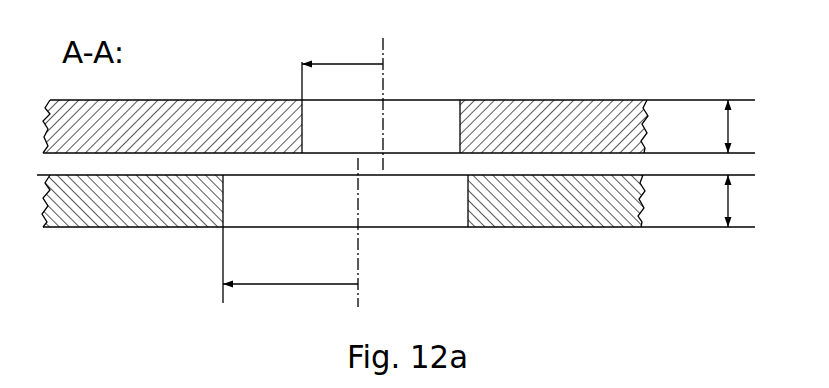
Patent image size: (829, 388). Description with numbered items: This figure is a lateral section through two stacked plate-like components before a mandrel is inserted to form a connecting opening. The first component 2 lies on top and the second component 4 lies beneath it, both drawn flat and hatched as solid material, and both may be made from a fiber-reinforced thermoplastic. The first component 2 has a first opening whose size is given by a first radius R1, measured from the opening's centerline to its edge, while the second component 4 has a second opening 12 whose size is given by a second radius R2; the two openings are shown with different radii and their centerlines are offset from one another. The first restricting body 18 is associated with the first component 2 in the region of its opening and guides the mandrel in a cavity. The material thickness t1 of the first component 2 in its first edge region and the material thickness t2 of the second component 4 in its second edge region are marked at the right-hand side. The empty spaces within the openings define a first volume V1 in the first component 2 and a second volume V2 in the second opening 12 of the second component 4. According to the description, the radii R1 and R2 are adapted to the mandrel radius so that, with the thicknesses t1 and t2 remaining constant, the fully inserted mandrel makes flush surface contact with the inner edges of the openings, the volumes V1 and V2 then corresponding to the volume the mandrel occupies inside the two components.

The first component 2 is at (583, 107).
The second component 4 is at (592, 215).
The first restricting body 18 is at (400, 106).
The second opening 12 is at (410, 215).
The first radius R1 is at (342, 64).
The second radius R2 is at (290, 265).
The first volume V1 is at (445, 115).
The second volume V2 is at (445, 215).
The material thickness of the first component t1 is at (705, 126).
The material thickness of the second component t2 is at (705, 201).